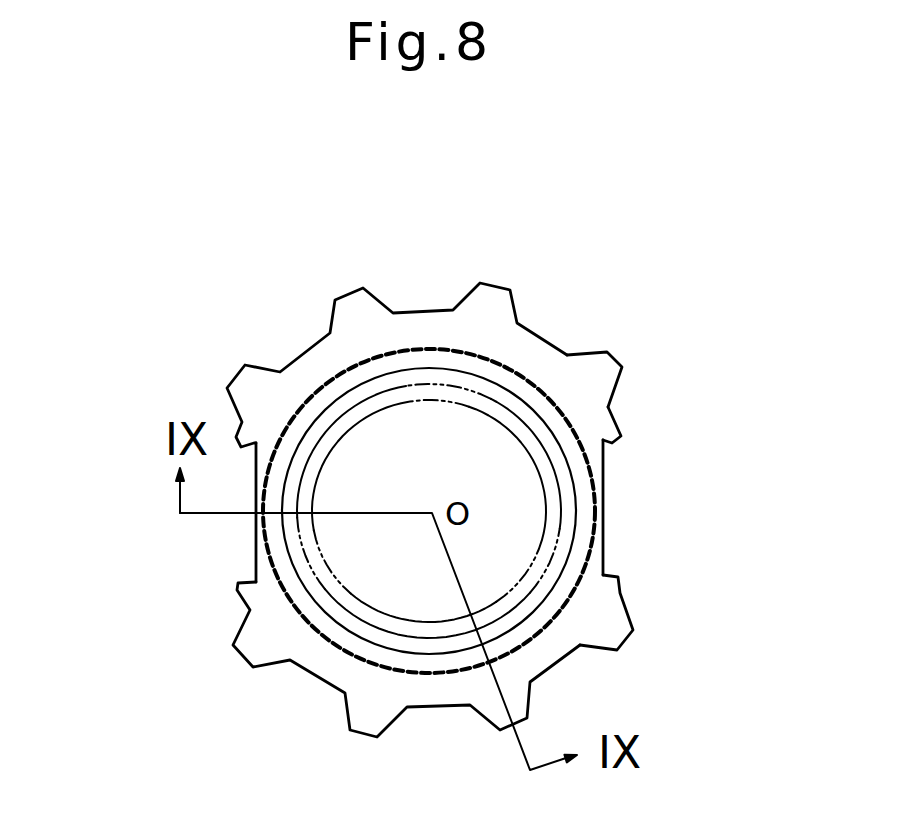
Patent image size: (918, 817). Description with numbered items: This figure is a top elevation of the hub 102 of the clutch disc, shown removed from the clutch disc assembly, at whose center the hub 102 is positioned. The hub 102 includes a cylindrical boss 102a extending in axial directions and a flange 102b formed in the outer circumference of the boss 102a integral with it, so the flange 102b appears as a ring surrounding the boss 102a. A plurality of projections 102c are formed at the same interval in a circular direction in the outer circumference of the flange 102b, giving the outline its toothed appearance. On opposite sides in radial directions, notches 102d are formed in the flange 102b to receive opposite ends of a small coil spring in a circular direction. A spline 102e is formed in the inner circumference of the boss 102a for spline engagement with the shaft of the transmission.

The hub 102 is at (556, 234).
The cylindrical boss 102a is at (498, 377).
The flange 102b is at (414, 331).
The projections 102c is at (606, 363).
The notches 102d is at (604, 549).
The spline 102e is at (330, 453).